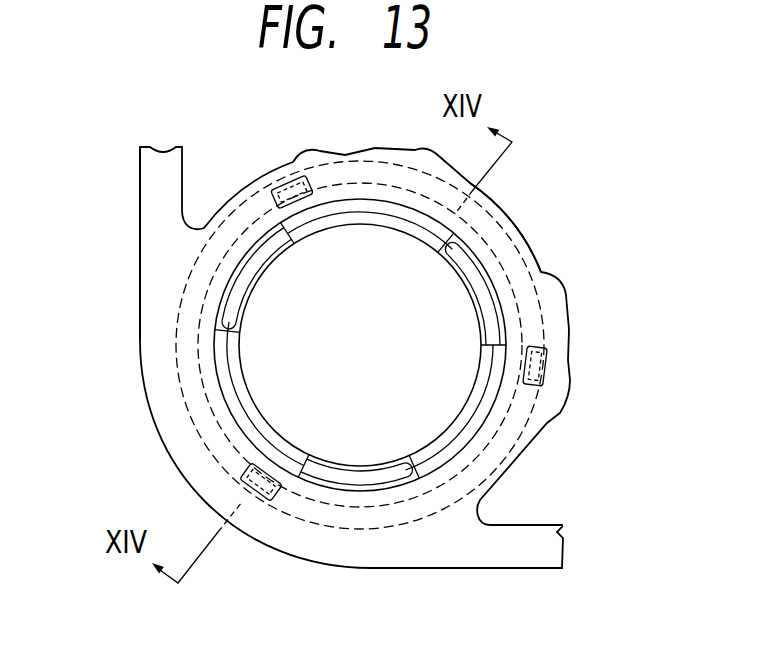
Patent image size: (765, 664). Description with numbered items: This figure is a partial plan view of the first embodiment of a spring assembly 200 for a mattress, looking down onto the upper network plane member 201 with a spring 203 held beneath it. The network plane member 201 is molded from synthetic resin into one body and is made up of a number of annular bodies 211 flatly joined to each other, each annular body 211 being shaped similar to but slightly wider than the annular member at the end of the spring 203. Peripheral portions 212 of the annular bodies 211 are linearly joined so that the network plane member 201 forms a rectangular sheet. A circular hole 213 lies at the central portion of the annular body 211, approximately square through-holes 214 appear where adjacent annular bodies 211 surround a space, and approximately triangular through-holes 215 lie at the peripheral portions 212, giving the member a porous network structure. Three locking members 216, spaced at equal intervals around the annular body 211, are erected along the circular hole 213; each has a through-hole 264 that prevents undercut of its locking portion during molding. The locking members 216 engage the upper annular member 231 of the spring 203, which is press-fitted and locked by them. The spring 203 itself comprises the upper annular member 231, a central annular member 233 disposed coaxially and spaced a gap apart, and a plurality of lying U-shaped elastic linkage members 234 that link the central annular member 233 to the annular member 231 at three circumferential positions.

The spring assembly 200 is at (518, 168).
The network plane member 201 is at (138, 320).
The spring 203 is at (262, 406).
The annular body 211 is at (533, 255).
The peripheral portion 212 is at (527, 570).
The circular hole 213 is at (360, 302).
The square through-hole 214 is at (577, 194).
The triangular through-hole 215 is at (564, 507).
The locking member 216 is at (277, 188).
The upper annular member 231 is at (176, 356).
The central annular member 233 is at (413, 230).
The elastic linkage member 234 is at (236, 327).
The through-hole 264 is at (246, 460).